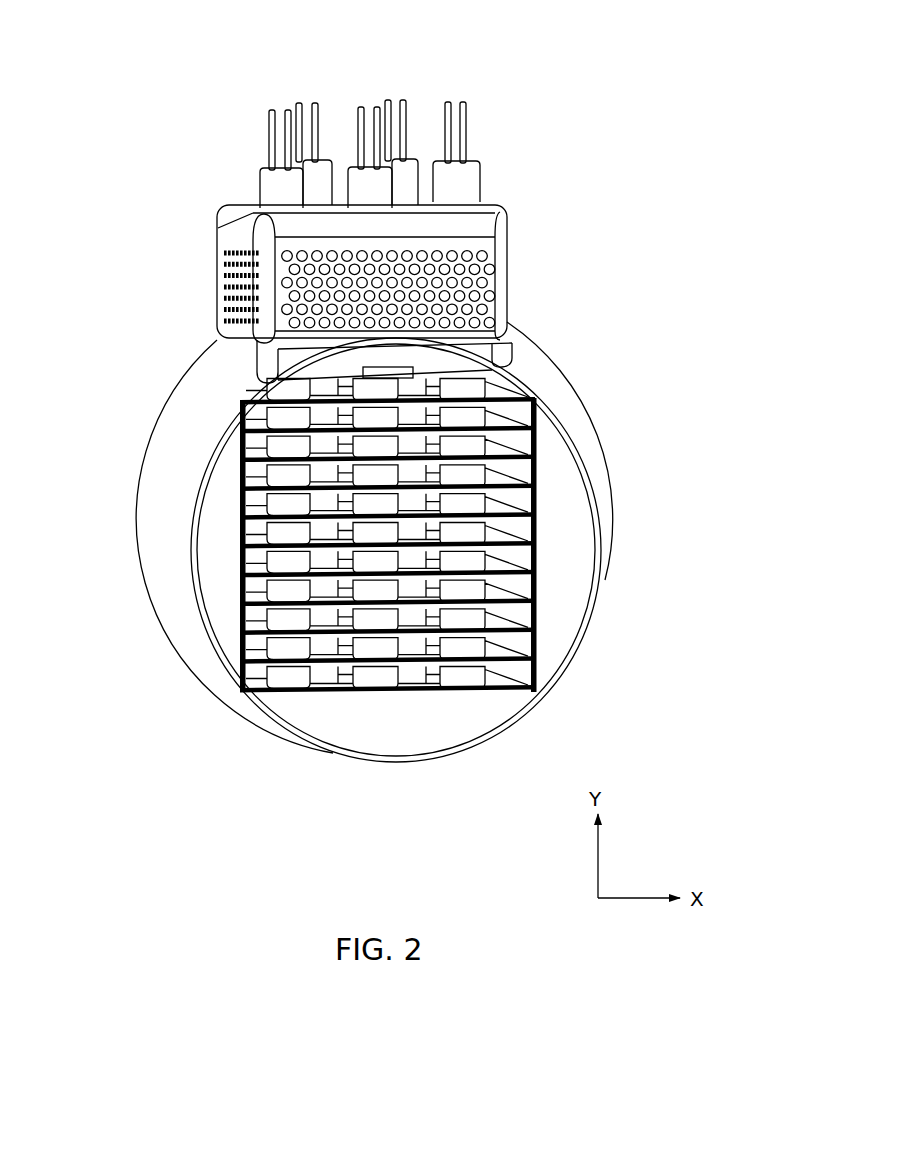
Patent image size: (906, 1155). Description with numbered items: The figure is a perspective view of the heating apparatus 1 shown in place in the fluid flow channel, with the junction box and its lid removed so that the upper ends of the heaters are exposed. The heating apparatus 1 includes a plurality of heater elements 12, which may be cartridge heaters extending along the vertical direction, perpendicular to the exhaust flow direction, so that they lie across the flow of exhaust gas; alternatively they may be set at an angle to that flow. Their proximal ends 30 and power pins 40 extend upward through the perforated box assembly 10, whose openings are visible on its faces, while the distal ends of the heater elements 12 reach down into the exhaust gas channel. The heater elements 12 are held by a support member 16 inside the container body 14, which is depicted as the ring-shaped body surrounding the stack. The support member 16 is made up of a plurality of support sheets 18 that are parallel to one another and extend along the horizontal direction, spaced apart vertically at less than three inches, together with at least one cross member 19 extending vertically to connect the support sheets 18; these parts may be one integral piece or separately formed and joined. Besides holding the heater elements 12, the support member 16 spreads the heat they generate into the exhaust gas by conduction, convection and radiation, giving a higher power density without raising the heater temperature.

The heating apparatus 1 is at (590, 48).
The perforated box assembly 10 is at (505, 283).
The heater elements 12 is at (273, 420).
The container body 14 is at (211, 732).
The support member 16 is at (411, 559).
The support sheets 18 is at (540, 537).
The cross member 19 is at (234, 589).
The proximal ends 30 is at (236, 168).
The power pins 40 is at (268, 133).